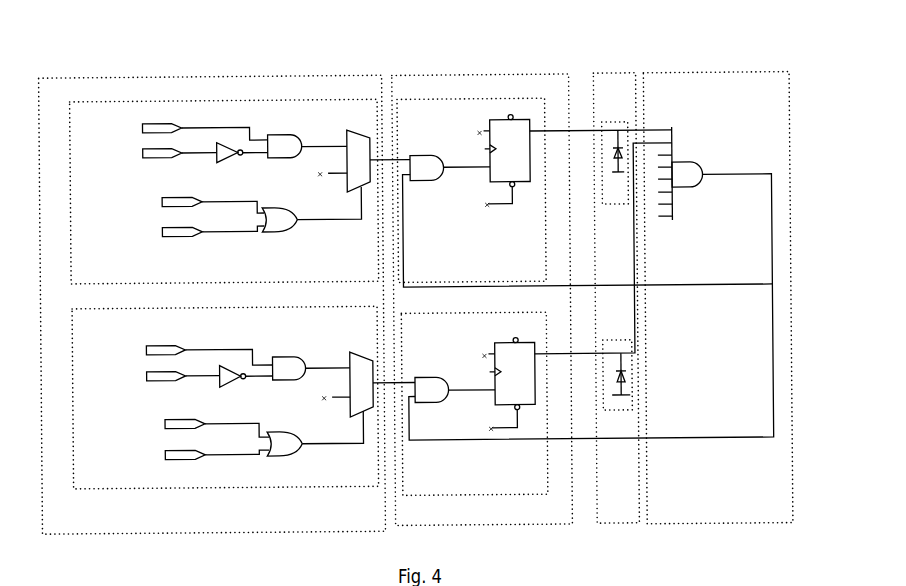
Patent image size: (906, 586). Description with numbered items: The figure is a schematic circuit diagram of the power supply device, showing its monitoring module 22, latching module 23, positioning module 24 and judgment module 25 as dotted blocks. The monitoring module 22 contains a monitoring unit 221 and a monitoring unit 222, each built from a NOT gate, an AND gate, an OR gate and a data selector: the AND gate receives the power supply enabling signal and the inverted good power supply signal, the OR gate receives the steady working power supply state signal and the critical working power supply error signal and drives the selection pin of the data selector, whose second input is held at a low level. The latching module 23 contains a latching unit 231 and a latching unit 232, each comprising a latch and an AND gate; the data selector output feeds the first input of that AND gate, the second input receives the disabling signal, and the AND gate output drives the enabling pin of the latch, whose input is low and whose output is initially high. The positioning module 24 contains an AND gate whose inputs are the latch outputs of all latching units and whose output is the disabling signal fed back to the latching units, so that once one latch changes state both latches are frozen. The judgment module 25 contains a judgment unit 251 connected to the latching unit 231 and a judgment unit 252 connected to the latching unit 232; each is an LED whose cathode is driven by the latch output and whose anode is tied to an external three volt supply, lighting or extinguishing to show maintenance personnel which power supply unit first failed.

The monitoring module 22 is at (223, 74).
The monitoring unit 221 is at (253, 100).
The monitoring unit 222 is at (174, 307).
The latching module 23 is at (482, 75).
The latching unit 231 is at (461, 100).
The latching unit 232 is at (459, 314).
The positioning module 24 is at (714, 73).
The judgment module 25 is at (619, 74).
The judgment unit 251 is at (608, 123).
The judgment unit 252 is at (607, 341).